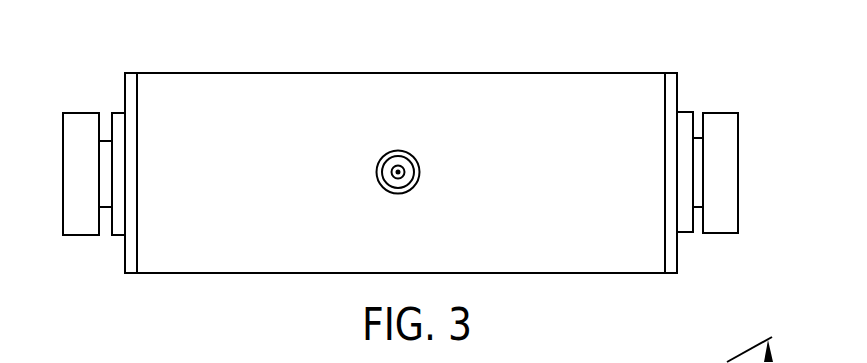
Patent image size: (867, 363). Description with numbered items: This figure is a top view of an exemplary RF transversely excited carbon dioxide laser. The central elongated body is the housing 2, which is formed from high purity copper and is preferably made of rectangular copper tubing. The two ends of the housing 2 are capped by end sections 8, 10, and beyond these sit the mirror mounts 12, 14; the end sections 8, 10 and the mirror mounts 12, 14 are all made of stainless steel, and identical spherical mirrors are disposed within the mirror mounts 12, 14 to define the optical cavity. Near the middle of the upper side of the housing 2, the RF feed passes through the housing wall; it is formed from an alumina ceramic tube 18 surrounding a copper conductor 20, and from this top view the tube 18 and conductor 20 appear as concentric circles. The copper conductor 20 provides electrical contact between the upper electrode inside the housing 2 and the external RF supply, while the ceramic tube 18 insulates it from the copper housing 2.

The housing 2 is at (417, 73).
The end section 8 is at (133, 72).
The end section 10 is at (672, 72).
The mirror mount 12 is at (83, 115).
The mirror mount 14 is at (728, 110).
The alumina ceramic tube 18 is at (407, 163).
The copper conductor 20 is at (402, 173).